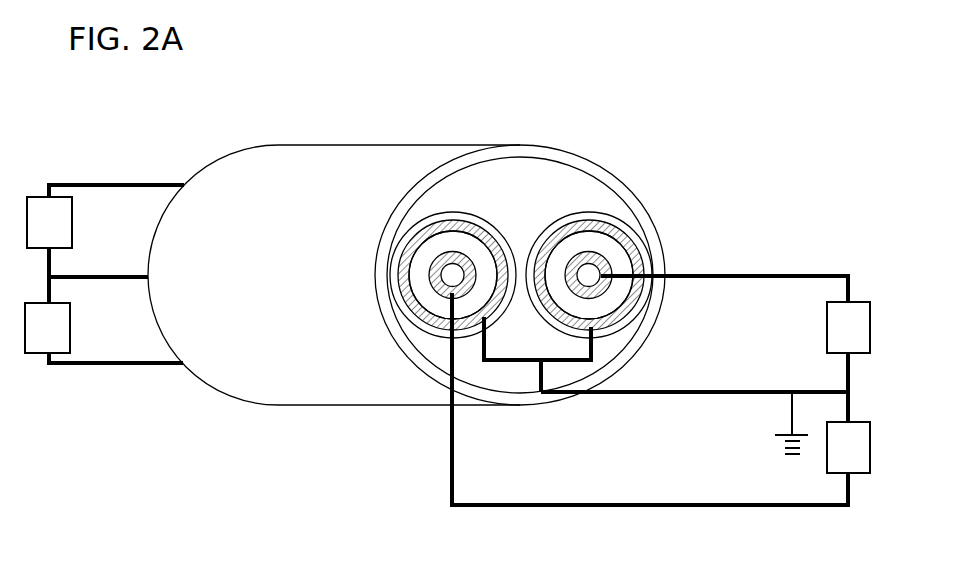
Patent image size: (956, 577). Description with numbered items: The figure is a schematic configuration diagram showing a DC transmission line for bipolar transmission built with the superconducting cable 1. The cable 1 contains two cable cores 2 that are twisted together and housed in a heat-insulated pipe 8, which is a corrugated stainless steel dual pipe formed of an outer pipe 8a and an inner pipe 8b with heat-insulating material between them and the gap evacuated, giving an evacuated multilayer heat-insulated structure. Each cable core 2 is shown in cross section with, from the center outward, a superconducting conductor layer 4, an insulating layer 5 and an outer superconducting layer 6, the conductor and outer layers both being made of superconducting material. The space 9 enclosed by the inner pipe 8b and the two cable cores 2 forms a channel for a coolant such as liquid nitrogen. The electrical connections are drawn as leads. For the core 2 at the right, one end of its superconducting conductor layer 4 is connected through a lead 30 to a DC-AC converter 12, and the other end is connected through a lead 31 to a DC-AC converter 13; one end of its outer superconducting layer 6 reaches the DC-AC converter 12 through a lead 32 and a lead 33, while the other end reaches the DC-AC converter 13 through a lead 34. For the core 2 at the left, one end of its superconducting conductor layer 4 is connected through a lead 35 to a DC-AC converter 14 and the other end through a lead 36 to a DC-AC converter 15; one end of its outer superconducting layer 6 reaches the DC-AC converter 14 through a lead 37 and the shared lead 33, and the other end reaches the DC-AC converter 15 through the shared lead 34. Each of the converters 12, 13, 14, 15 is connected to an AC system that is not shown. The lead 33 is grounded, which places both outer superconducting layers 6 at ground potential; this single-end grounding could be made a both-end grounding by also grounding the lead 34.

The superconducting cable 1 is at (353, 101).
The cable core 2 is at (516, 272).
The superconducting conductor layer 4 is at (498, 342).
The insulating layer 5 is at (568, 226).
The outer superconducting layer 6 is at (529, 316).
The heat-insulated pipe 8 is at (511, 313).
The outer pipe 8a is at (511, 296).
The inner pipe 8b is at (368, 446).
The space 9 is at (527, 138).
The DC-AC converter 12 is at (848, 327).
The DC-AC converter 13 is at (49, 222).
The DC-AC converter 14 is at (848, 447).
The DC-AC converter 15 is at (47, 328).
The lead 30 is at (724, 264).
The lead 31 is at (120, 217).
The lead 32 is at (595, 353).
The lead 33 is at (694, 405).
The lead 34 is at (98, 249).
The lead 35 is at (650, 399).
The lead 36 is at (116, 388).
The lead 37 is at (532, 421).